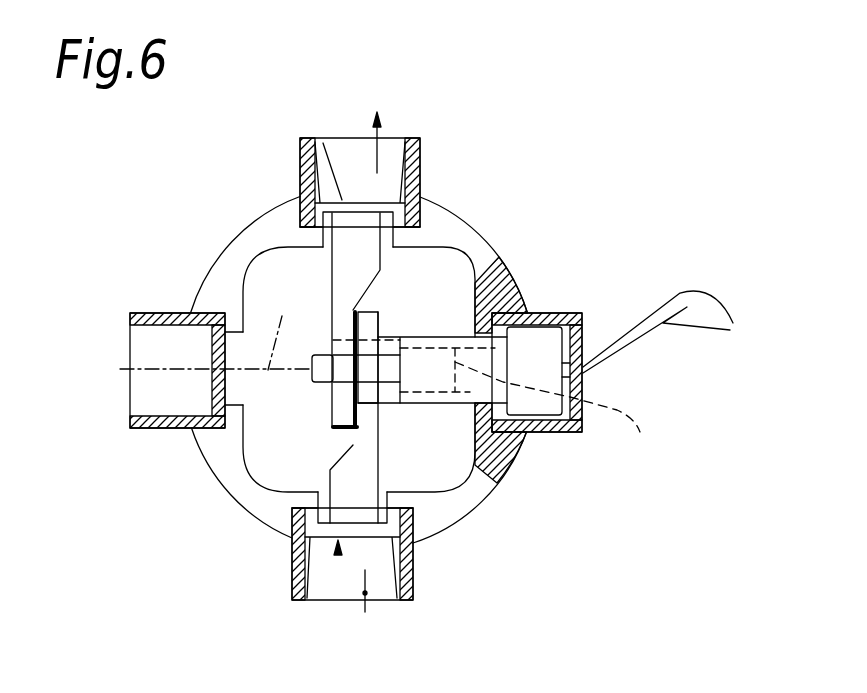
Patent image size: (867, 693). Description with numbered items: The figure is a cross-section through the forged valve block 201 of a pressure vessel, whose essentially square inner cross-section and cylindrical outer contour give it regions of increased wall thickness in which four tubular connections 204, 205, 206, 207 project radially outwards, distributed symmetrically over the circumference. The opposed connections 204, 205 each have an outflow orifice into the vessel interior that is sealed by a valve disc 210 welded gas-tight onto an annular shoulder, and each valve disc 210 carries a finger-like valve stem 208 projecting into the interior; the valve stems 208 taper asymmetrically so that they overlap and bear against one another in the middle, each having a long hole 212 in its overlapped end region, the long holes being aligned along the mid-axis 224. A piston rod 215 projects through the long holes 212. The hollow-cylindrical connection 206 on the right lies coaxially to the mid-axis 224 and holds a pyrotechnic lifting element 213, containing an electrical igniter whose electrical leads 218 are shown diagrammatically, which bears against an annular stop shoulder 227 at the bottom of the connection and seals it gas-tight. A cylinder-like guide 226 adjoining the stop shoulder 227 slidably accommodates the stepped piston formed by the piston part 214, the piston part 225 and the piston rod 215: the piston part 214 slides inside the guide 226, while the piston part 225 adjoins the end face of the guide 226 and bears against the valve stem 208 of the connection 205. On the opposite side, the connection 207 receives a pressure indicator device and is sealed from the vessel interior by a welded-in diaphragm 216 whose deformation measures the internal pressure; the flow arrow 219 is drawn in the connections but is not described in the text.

The valve block 201 is at (248, 243).
The connection 204 is at (417, 137).
The connection 205 is at (413, 587).
The hollow-cylindrical connection 206 is at (543, 307).
The connection 207 is at (160, 313).
The valve stem 208 is at (323, 137).
The valve disc 210 is at (420, 187).
The long hole 212 is at (345, 395).
The lifting element 213 is at (550, 348).
The piston part 214 is at (531, 405).
The piston rod 215 is at (312, 383).
The diaphragm 216 is at (212, 358).
The electrical leads 218 is at (682, 332).
The flow direction arrow 219 is at (370, 150).
The mid-axis 224 is at (282, 316).
The piston part 225 is at (393, 340).
The cylinder-like guide 226 is at (437, 410).
The annular stop shoulder 227 is at (517, 450).